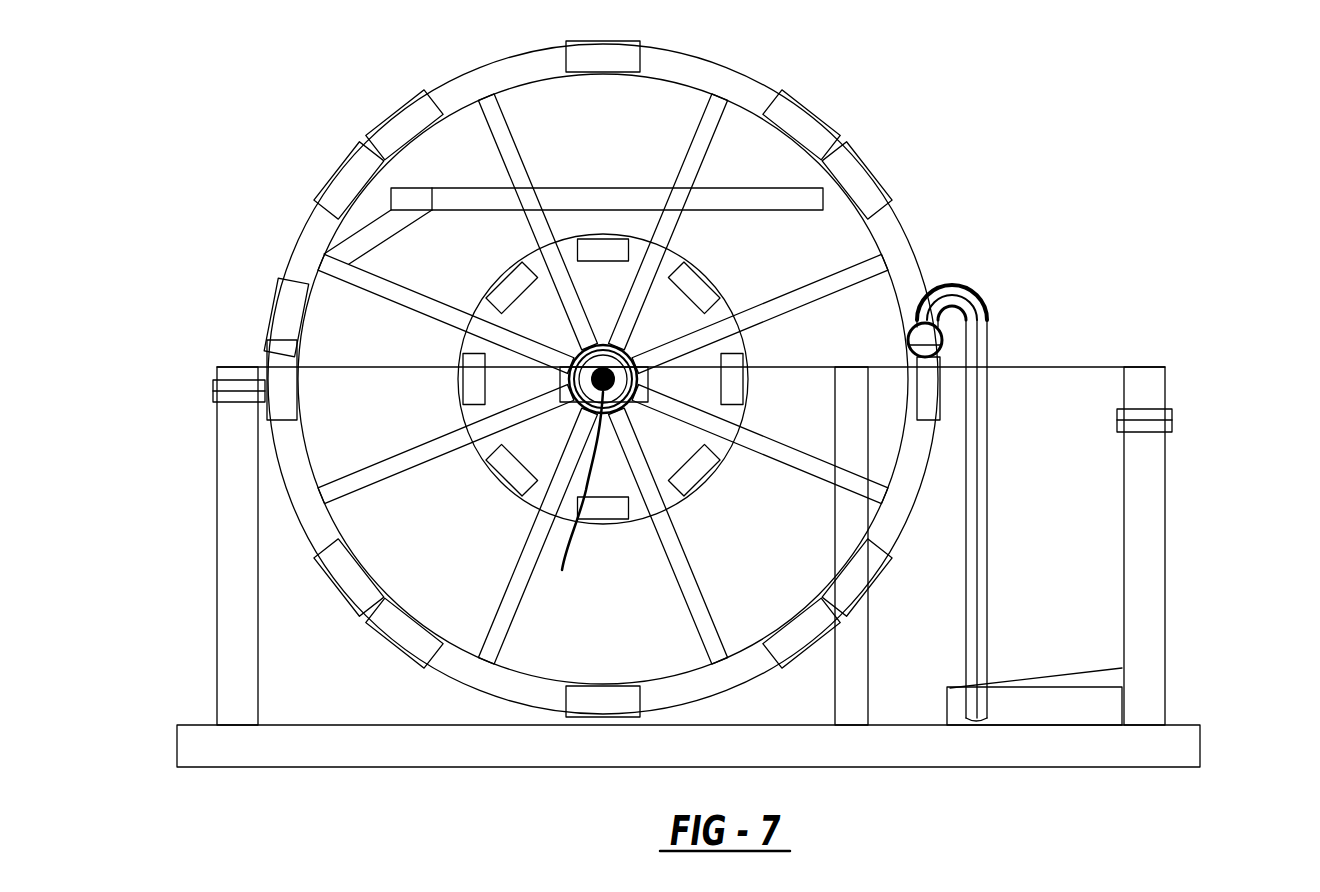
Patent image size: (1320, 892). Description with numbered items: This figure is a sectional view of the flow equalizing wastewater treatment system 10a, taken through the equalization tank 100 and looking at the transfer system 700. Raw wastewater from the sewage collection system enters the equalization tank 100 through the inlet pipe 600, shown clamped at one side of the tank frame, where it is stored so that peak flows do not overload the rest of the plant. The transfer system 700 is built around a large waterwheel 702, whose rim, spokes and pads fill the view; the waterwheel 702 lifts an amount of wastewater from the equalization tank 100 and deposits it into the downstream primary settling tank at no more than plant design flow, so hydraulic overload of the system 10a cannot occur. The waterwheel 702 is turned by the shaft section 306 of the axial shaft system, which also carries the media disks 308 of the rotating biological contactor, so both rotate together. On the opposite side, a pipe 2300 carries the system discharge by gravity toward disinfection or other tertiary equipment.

The flow equalizing wastewater treatment system 10a is at (255, 158).
The equalization tank 100 is at (1068, 363).
The shaft section 306 is at (562, 570).
The media disks 308 is at (688, 252).
The inlet pipe 600 is at (213, 384).
The transfer system 700 is at (910, 175).
The waterwheel 702 is at (785, 98).
The pipe 2300 is at (1172, 420).